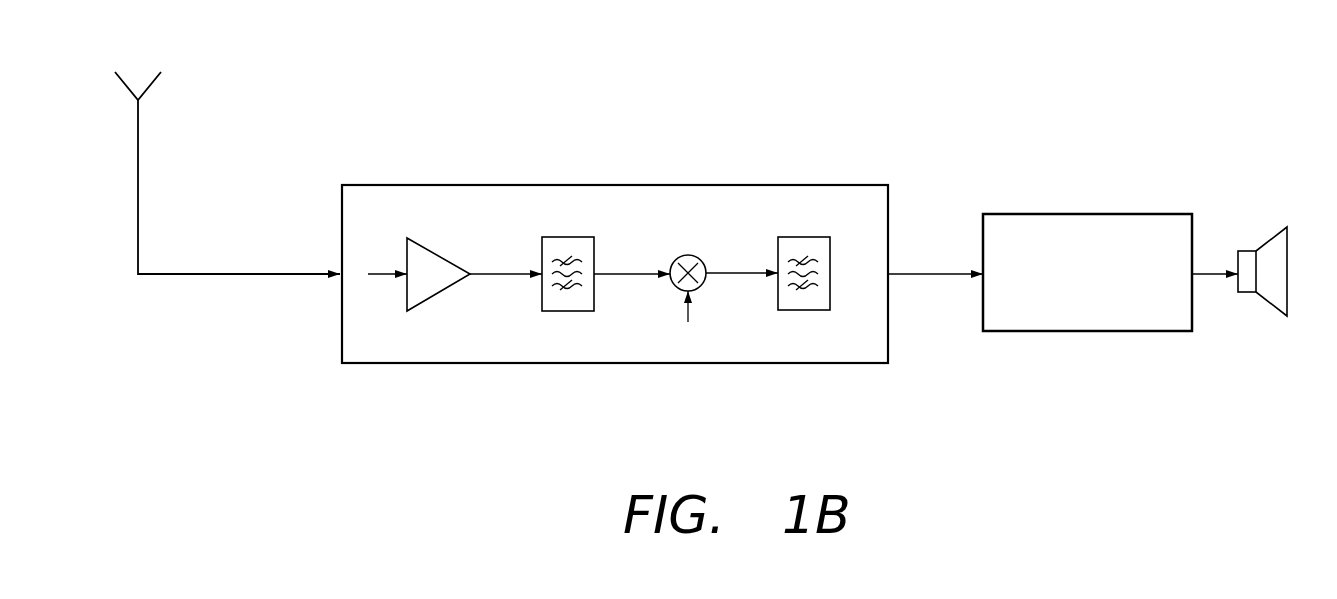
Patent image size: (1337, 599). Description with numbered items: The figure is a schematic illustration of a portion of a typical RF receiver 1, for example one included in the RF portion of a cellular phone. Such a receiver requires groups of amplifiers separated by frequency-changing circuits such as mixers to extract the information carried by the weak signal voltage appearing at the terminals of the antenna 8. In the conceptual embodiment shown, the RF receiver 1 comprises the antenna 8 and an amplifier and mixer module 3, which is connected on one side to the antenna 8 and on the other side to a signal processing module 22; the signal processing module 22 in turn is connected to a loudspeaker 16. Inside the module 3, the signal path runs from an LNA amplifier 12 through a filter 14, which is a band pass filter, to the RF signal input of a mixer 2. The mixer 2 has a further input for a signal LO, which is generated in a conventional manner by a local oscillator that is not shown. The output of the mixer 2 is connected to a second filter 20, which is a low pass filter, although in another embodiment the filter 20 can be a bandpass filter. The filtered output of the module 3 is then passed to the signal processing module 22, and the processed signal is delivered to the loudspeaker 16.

The RF receiver 1 is at (767, 72).
The antenna 8 is at (141, 124).
The amplifier and mixer module 3 is at (420, 185).
The LNA amplifier 12 is at (417, 243).
The filter 14 is at (560, 237).
The mixer 2 is at (684, 255).
The filter 20 is at (796, 237).
The signal processing module 22 is at (1074, 214).
The loudspeaker 16 is at (1262, 243).